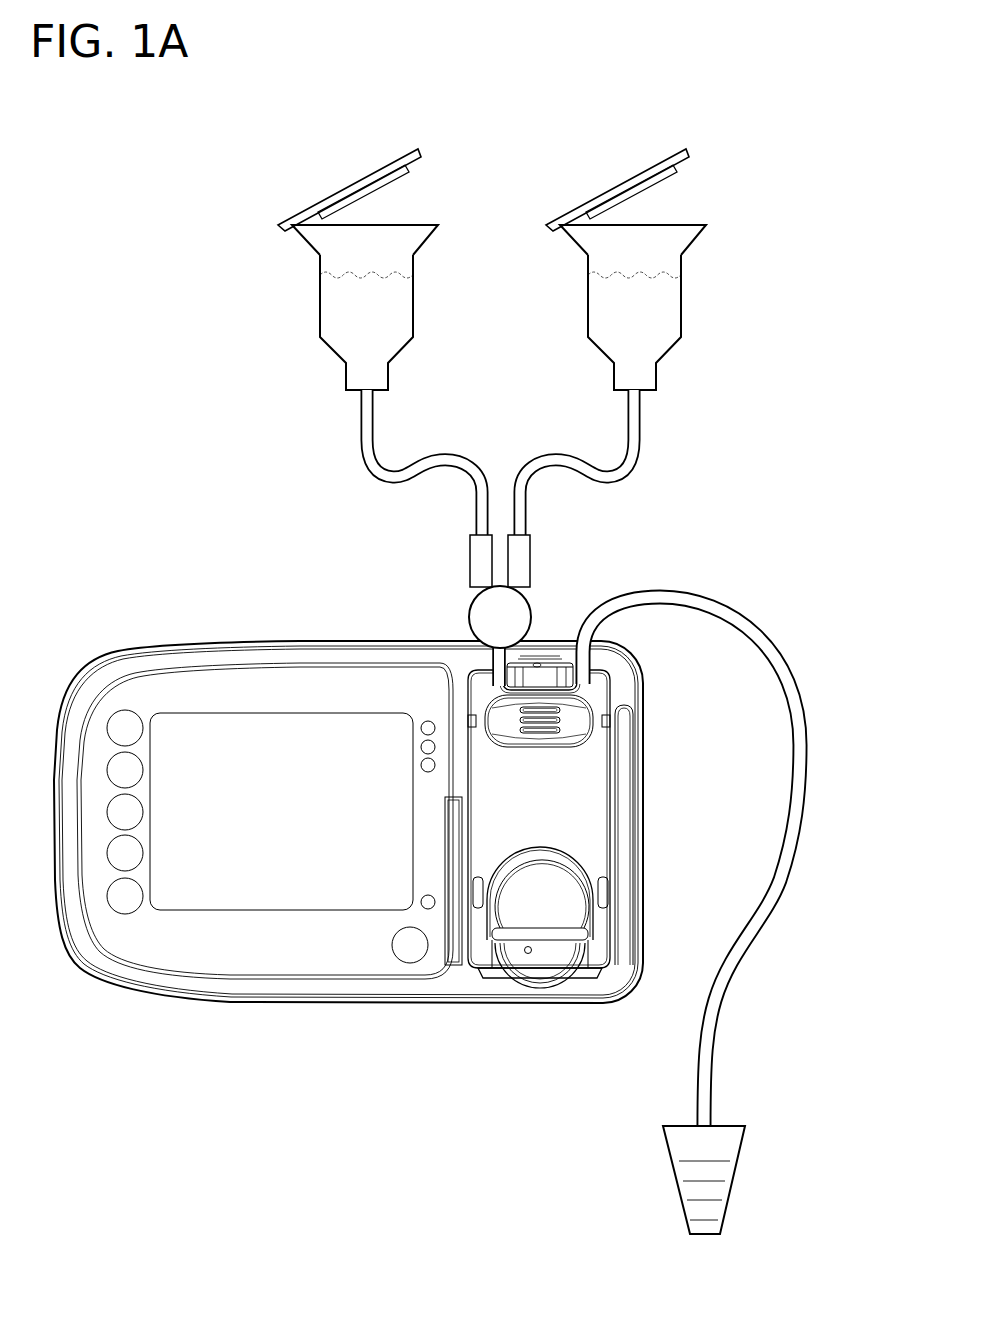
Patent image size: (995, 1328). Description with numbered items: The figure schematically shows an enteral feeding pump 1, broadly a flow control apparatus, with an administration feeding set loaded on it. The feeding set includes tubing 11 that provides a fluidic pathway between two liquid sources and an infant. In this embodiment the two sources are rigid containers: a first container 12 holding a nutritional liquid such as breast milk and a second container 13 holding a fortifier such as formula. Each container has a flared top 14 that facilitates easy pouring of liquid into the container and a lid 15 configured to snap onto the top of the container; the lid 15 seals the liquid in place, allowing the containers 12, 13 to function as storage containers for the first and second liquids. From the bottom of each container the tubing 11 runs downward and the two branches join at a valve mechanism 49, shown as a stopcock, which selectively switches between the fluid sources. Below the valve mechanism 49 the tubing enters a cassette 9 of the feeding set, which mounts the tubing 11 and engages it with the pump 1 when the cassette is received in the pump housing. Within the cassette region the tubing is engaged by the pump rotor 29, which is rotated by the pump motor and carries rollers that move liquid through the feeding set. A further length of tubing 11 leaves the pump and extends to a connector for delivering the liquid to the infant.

The enteral feeding pump 1 is at (88, 1056).
The cassette 9 is at (611, 796).
The tubing 11 is at (380, 480).
The container of nutritional liquid 12 is at (413, 305).
The container of fortifier 13 is at (587, 318).
The flared top 14 is at (418, 225).
The lid 15 is at (357, 192).
The pump rotor 29 is at (548, 952).
The valve mechanism 49 is at (472, 628).